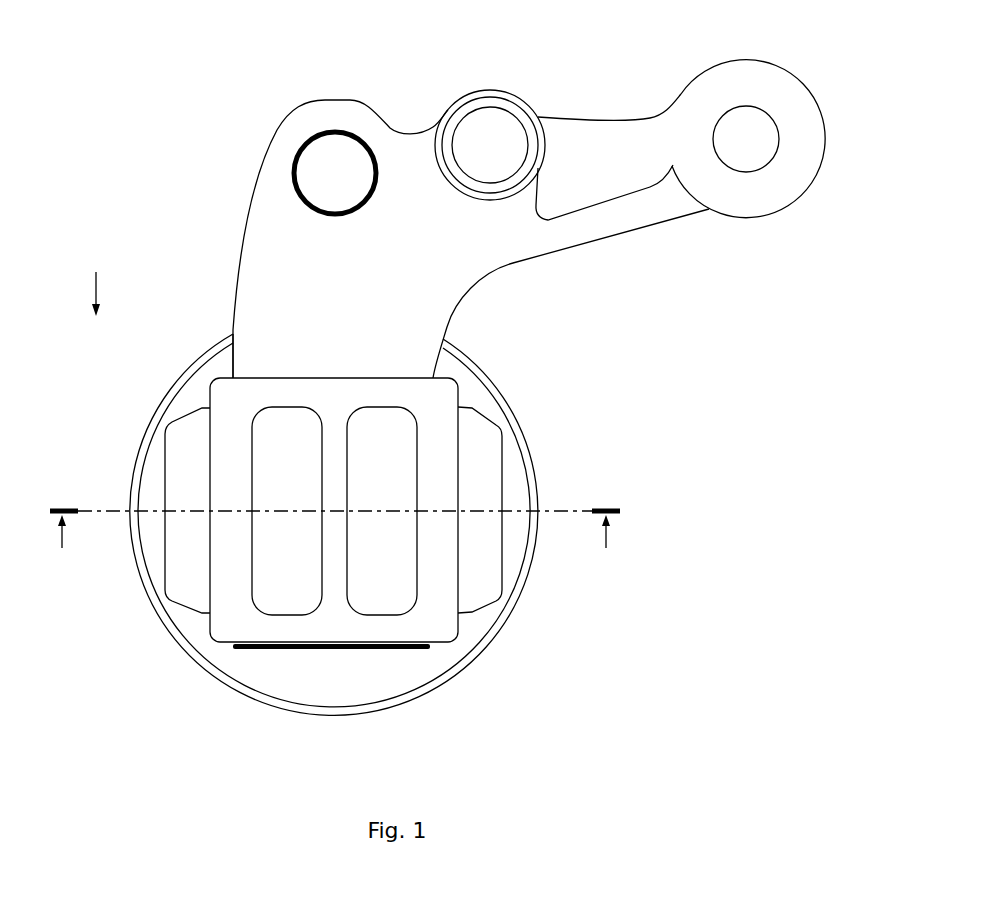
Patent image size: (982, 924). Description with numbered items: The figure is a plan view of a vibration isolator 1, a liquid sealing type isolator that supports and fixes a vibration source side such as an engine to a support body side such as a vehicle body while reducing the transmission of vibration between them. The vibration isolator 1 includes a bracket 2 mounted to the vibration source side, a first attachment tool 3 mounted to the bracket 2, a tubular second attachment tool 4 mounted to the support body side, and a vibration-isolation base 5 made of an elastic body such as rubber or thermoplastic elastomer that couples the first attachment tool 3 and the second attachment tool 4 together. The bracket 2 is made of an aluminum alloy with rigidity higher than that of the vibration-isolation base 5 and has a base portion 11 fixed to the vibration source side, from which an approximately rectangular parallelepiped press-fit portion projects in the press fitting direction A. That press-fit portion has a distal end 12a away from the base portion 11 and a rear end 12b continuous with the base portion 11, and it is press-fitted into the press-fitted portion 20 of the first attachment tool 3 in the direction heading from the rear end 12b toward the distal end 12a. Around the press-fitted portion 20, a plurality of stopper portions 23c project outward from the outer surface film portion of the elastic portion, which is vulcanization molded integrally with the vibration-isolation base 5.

The vibration isolator 1 is at (138, 106).
The bracket 2 is at (587, 73).
The first attachment tool 3 is at (472, 397).
The second attachment tool 4 is at (515, 431).
The vibration-isolation base 5 is at (383, 672).
The base portion 11 is at (373, 124).
The distal end 12a is at (280, 650).
The rear end 12b is at (254, 372).
The press-fitted portion 20 is at (224, 392).
The stopper portions 23c is at (295, 420).